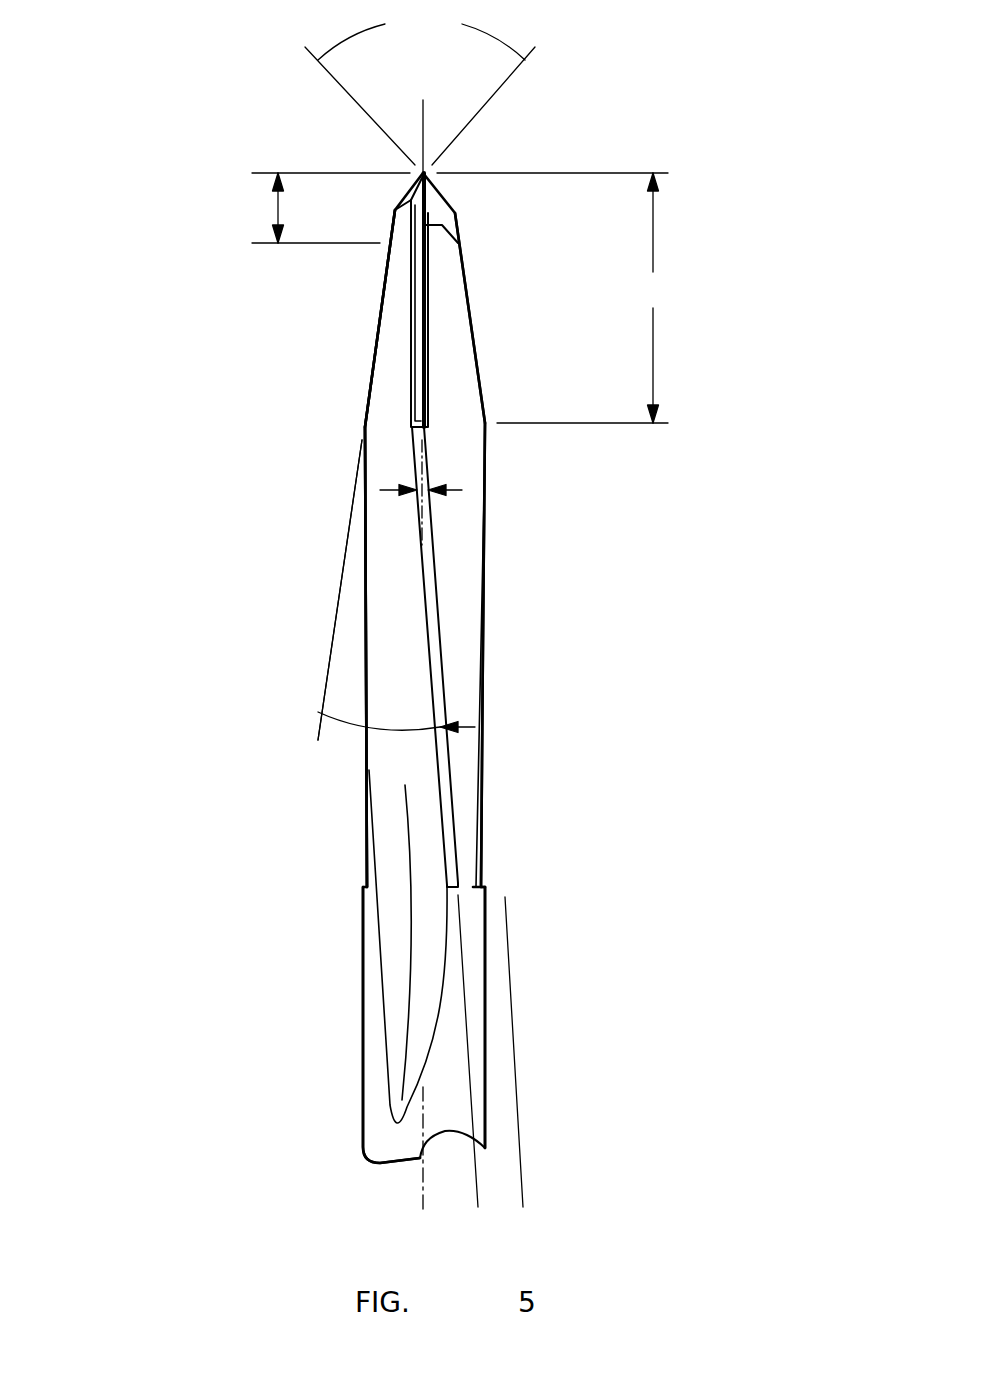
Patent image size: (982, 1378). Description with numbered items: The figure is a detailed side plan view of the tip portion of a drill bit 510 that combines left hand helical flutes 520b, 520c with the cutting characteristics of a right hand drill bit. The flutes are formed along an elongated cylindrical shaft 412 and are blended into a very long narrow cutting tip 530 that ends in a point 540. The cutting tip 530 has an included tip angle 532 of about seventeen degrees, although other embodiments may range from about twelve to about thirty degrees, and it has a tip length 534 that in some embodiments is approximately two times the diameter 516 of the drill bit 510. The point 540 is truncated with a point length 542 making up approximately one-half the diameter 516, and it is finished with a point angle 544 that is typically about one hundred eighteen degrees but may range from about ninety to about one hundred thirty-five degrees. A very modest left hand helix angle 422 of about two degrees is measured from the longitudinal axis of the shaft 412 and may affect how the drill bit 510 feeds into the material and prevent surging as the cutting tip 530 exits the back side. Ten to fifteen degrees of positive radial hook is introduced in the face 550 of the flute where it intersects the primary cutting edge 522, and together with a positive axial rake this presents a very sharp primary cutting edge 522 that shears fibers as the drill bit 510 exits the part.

The drill bit 510 is at (215, 299).
The point 540 is at (462, 189).
The cutting tip 530 is at (495, 246).
The point length 542 is at (274, 209).
The point angle 544 is at (420, 90).
The tip length 534 is at (562, 298).
The primary cutting edge 522 is at (445, 379).
The elongated cylindrical shaft 412 is at (534, 506).
The helix angle 422 is at (428, 497).
The face 550 is at (386, 395).
The included tip angle 532 is at (303, 709).
The helical flute 520b is at (443, 785).
The helical flute 520c is at (478, 838).
The diameter 516 is at (363, 1082).